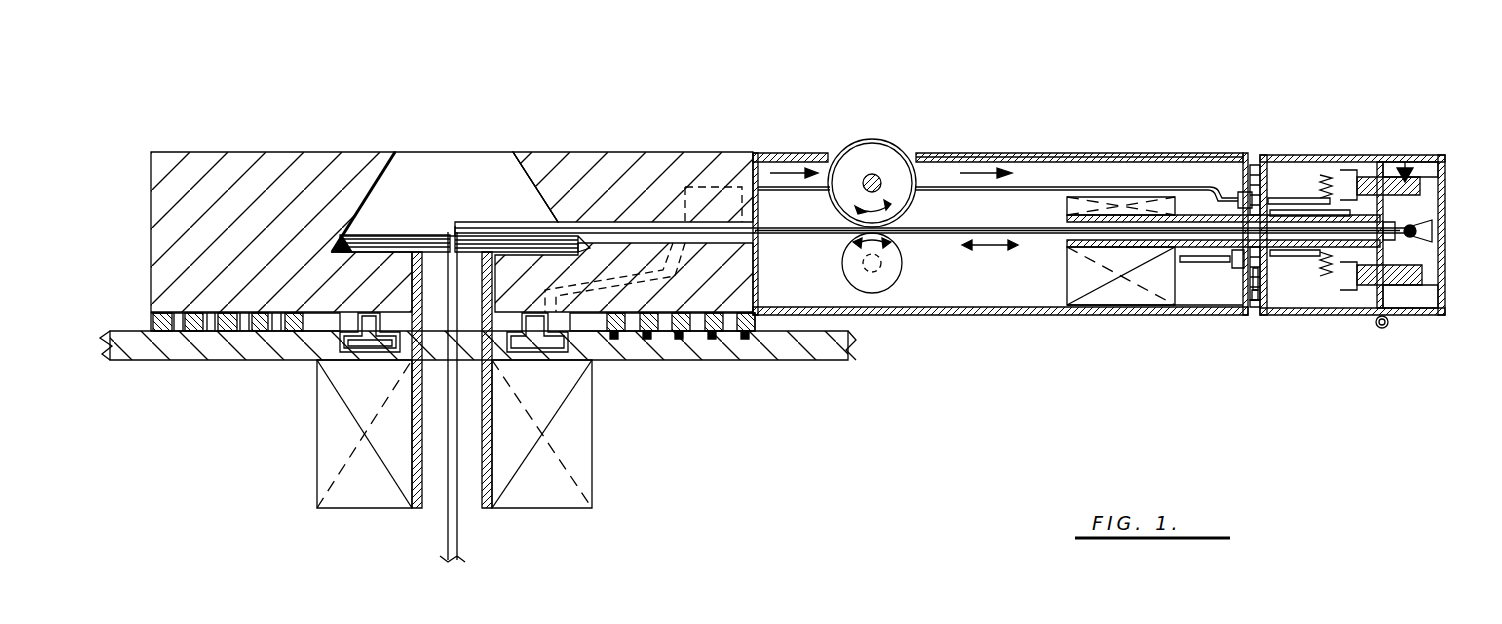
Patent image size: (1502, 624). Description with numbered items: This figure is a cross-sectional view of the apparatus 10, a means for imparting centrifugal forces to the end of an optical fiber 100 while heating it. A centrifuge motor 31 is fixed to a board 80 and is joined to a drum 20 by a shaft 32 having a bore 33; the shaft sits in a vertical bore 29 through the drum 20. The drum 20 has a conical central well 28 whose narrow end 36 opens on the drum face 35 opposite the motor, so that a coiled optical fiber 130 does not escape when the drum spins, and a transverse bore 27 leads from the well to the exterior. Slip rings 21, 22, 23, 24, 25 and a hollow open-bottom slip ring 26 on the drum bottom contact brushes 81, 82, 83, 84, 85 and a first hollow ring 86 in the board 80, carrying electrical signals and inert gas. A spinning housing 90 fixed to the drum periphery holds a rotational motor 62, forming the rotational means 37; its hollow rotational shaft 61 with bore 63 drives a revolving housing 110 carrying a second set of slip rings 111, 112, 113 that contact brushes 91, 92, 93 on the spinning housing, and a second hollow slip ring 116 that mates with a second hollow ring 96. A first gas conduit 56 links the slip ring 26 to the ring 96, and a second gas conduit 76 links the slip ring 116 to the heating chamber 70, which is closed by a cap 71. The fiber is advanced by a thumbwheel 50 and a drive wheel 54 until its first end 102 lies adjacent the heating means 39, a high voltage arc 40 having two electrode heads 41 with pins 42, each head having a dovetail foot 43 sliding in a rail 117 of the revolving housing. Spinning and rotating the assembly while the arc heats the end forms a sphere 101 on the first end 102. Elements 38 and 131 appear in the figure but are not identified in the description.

The apparatus 10 is at (657, 72).
The drum 20 is at (253, 152).
The electrically conductive slip ring 21 is at (160, 333).
The electrically conductive slip ring 22 is at (194, 333).
The electrically conductive slip ring 23 is at (228, 333).
The electrically conductive slip ring 24 is at (262, 333).
The electrically conductive slip ring 25 is at (296, 333).
The first hollow slip ring 26 is at (376, 352).
The transverse bore 27 is at (648, 216).
The central well 28 is at (420, 162).
The vertical bore 29 is at (505, 338).
The centrifuge motor 31 is at (372, 510).
The shaft 32 is at (488, 512).
The bore 33 is at (441, 510).
The drum face 35 is at (620, 152).
The narrow end 36 is at (516, 153).
The rotational means 37 is at (1133, 312).
The housing 38 is at (965, 283).
The heating means 39 is at (1402, 312).
The high voltage arc apparatus 40 is at (1404, 160).
The electrode head 41 is at (1422, 186).
The pin 42 is at (1420, 226).
The dovetail-shaped foot portion 43 is at (1345, 196).
The thumbwheel 50 is at (884, 140).
The drive wheel 54 is at (900, 280).
The first gas conduit 56 is at (1050, 190).
The rotational shaft 61 is at (1230, 268).
The rotational motor 62 is at (1067, 282).
The bore 63 is at (1068, 248).
The heating chamber 70 is at (1420, 312).
The cap 71 is at (1430, 165).
The second gas conduit 76 is at (1290, 192).
The board 80 is at (798, 362).
The brush 81 is at (745, 340).
The brush 82 is at (712, 340).
The brush 83 is at (680, 340).
The brush 84 is at (648, 340).
The brush 85 is at (616, 340).
The first hollow ring 86 is at (388, 352).
The spinning housing 90 is at (1080, 152).
The brush 91 is at (1256, 308).
The brush 92 is at (1255, 300).
The brush 93 is at (1250, 305).
The second hollow ring 96 is at (1206, 263).
The optical fiber 100 is at (480, 226).
The sphere 101 is at (1416, 233).
The first end 102 is at (1432, 242).
The revolving housing 110 is at (1325, 170).
The electrically conductive slip ring 111 is at (1255, 165).
The electrically conductive slip ring 112 is at (1265, 170).
The electrically conductive slip ring 113 is at (1300, 175).
The second hollow slip ring 116 is at (1342, 262).
The rail 117 is at (1340, 272).
The optical fiber 130 is at (368, 233).
The tape strip 131 is at (396, 236).